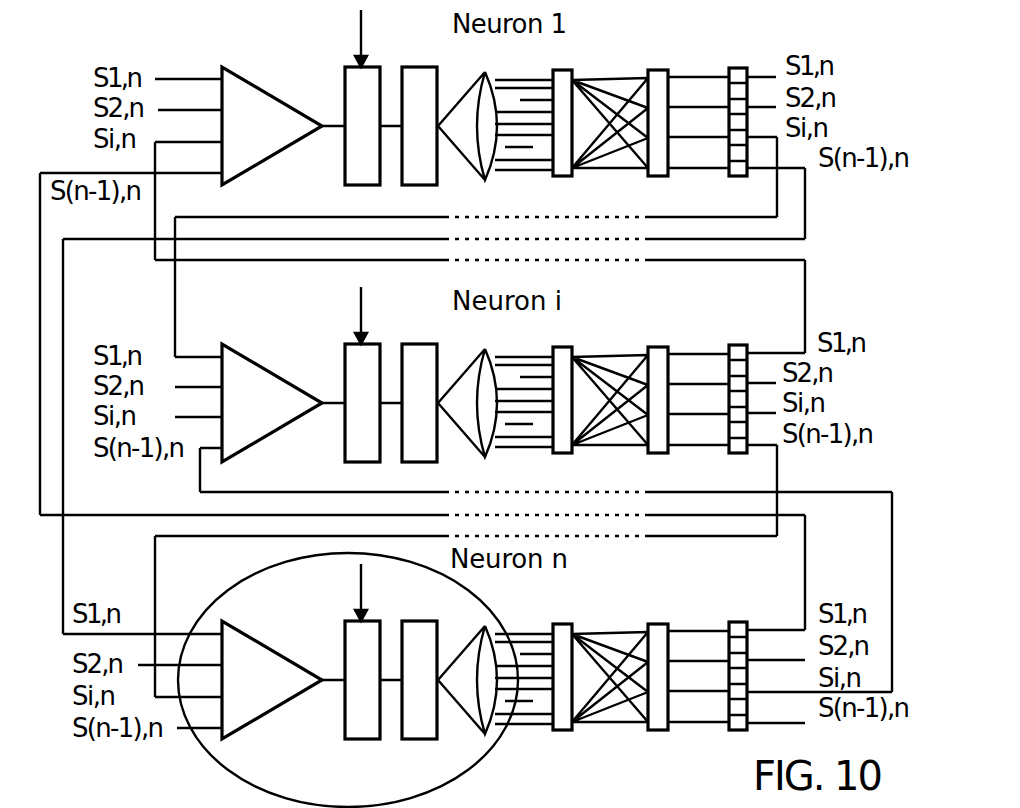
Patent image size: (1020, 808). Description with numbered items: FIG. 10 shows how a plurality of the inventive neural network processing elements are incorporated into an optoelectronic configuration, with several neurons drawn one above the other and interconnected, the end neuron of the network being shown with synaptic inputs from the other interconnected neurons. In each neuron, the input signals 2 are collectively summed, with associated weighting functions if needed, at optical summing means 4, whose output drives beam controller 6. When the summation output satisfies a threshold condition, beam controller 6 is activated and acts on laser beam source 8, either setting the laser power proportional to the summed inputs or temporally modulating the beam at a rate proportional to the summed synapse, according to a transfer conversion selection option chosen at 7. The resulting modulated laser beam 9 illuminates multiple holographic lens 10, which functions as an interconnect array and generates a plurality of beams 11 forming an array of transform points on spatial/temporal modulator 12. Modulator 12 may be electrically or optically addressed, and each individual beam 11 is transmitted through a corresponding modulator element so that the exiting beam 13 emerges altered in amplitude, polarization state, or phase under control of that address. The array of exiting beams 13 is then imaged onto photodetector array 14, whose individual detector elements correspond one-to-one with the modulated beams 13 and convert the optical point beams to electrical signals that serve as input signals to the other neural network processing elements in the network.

The input signals 2 is at (157, 58).
The optical summing means 4 is at (277, 98).
The beam controller 6 is at (345, 92).
The transfer conversion selection option 7 is at (351, 315).
The laser beam source 8 is at (417, 67).
The laser beam 9 is at (513, 172).
The multiple holographic lens 10 is at (561, 178).
The beams 11 is at (609, 62).
The spatial/temporal modulator 12 is at (657, 69).
The exiting beams 13 is at (699, 56).
The photodetector array 14 is at (738, 67).